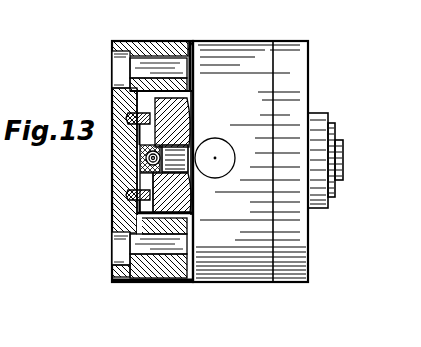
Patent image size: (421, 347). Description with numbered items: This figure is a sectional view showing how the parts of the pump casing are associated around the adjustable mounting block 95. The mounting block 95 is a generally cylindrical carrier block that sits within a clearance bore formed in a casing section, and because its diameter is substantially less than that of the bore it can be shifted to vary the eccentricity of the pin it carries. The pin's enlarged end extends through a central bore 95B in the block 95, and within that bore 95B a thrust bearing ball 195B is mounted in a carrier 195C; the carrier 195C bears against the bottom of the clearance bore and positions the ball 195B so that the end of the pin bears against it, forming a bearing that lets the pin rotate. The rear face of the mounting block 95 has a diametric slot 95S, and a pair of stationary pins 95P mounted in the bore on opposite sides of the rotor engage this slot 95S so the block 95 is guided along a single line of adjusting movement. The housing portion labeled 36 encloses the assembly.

The housing body 36 is at (177, 41).
The mounting block 95 is at (149, 175).
The central bore 95B is at (172, 207).
The stationary pins 95P is at (140, 124).
The diametric slot 95S is at (150, 232).
The thrust bearing ball 195B is at (187, 150).
The carrier 195C is at (185, 116).